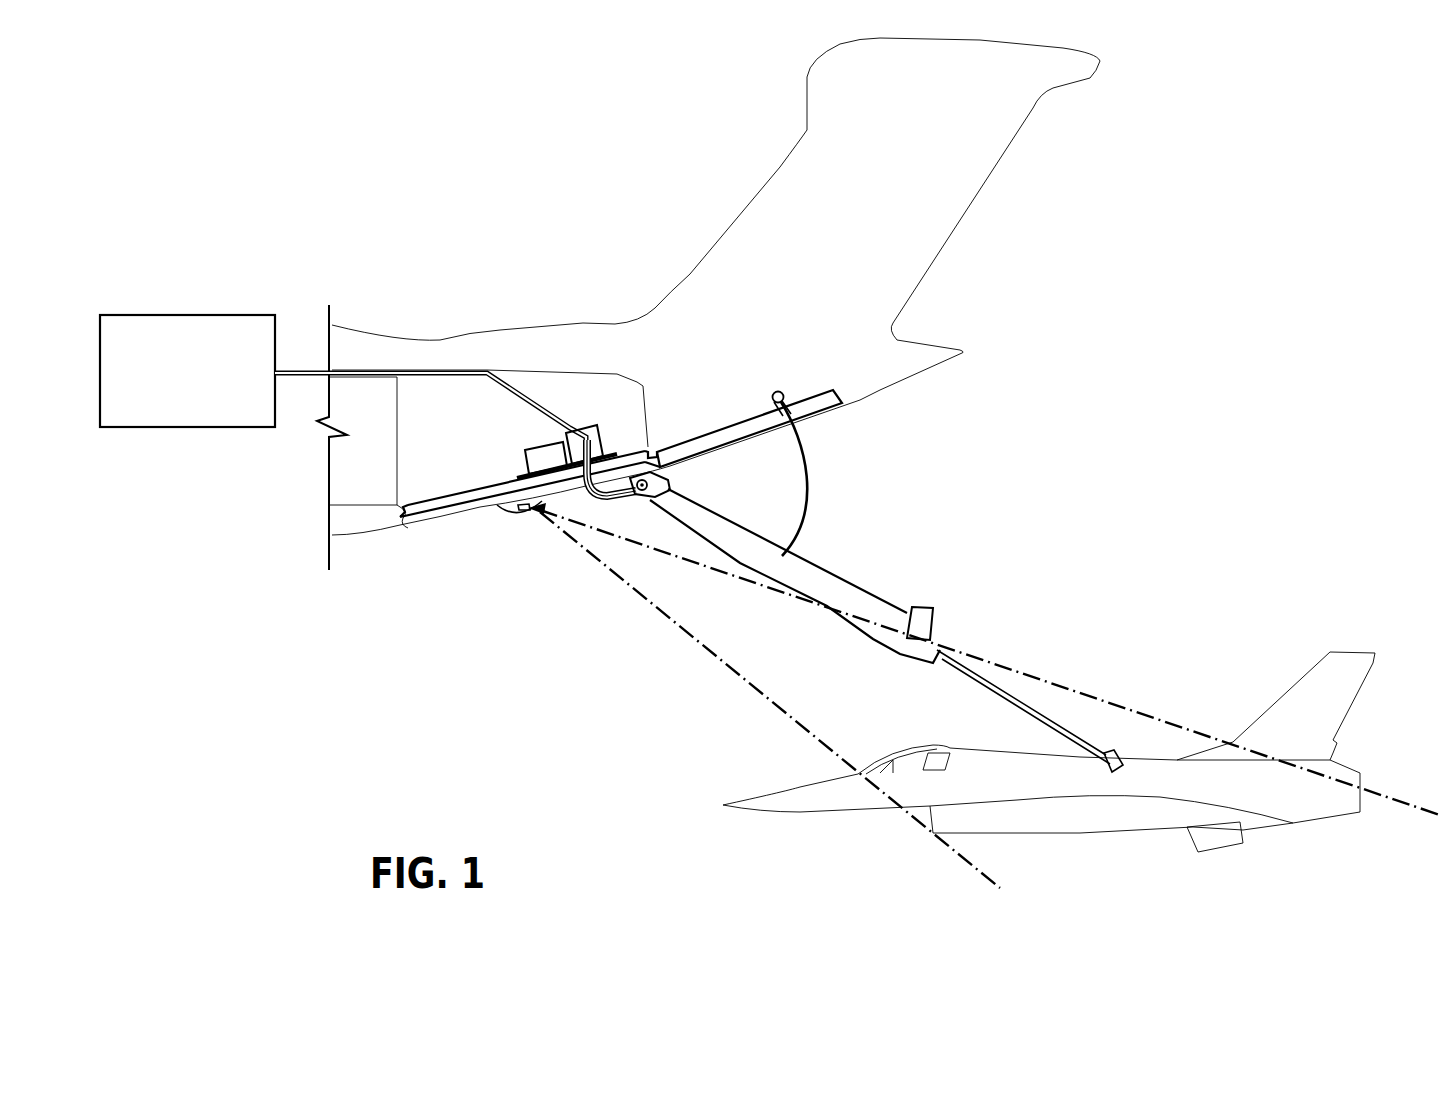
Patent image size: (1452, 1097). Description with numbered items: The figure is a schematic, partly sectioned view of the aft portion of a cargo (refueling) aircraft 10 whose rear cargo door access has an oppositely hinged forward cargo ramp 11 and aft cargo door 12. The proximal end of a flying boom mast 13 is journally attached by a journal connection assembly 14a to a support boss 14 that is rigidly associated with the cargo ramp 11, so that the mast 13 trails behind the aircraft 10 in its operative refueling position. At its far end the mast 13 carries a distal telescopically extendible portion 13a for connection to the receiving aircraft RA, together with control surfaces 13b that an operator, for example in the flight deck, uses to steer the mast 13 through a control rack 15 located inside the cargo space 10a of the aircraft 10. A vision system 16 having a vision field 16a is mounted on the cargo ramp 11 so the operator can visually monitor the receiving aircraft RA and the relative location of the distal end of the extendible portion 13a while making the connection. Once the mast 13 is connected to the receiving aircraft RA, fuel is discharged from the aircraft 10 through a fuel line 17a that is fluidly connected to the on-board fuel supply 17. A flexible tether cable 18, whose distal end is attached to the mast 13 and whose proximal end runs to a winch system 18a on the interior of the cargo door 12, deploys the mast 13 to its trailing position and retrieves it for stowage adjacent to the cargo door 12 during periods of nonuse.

The cargo (refueling) aircraft 10 is at (545, 212).
The cargo space 10a is at (488, 442).
The forward cargo ramp 11 is at (441, 520).
The aft cargo door 12 is at (813, 407).
The flying boom mast 13 is at (847, 575).
The telescopically extendible portion 13a is at (1080, 735).
The control surfaces 13b is at (927, 620).
The support boss 14 is at (630, 507).
The journal connection assembly 14a is at (677, 487).
The control rack 15 is at (566, 426).
The vision system 16 is at (507, 517).
The vision field 16a is at (698, 640).
The on-board fuel supply 17 is at (208, 313).
The fuel line 17a is at (450, 385).
The flexible tether cable 18 is at (807, 507).
The winch system 18a is at (786, 392).
The receiving aircraft RA is at (1070, 812).